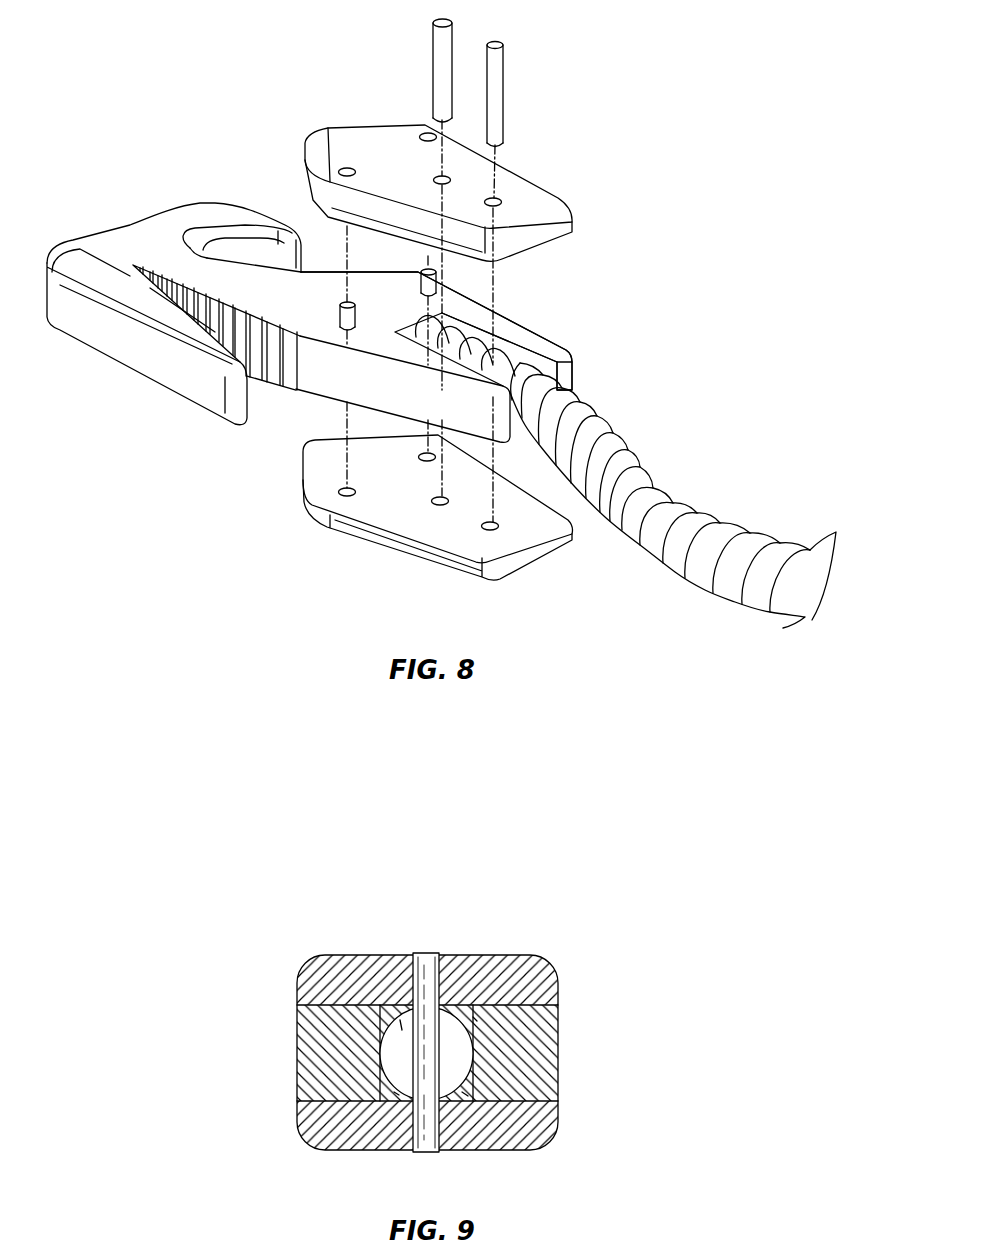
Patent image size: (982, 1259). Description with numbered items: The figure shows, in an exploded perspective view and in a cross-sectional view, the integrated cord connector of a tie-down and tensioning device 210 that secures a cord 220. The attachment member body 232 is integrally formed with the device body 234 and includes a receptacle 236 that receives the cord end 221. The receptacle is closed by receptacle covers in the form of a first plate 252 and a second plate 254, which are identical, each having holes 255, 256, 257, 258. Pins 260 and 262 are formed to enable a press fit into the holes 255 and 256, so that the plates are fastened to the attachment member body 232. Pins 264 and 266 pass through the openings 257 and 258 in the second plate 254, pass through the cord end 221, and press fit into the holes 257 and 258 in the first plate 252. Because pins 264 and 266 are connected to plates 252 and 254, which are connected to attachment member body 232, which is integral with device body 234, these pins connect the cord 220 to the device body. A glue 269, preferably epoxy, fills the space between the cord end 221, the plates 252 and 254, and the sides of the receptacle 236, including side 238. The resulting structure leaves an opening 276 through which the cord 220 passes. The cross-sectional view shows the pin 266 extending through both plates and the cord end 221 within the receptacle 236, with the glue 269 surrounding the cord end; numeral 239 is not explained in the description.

In FIG. 8, the tie-down and tensioning device 210 is at (553, 179).
In FIG. 8, the cord 220 is at (680, 510).
In FIG. 8, the cord end 221 is at (497, 355).
In FIG. 8, the attachment member body 232 is at (520, 353).
In FIG. 9, the attachment member body 232 is at (545, 1055).
In FIG. 8, the device body 234 is at (255, 293).
In FIG. 8, the receptacle 236 is at (547, 340).
In FIG. 9, the receptacle 236 is at (398, 1094).
In FIG. 9, the side of receptacle 238 is at (369, 1020).
In FIG. 8, the arm end face 239 is at (560, 365).
In FIG. 9, the arm end face 239 is at (477, 1018).
In FIG. 8, the first plate 252 is at (543, 553).
In FIG. 9, the first plate 252 is at (560, 1120).
In FIG. 8, the second plate 254 is at (372, 123).
In FIG. 9, the second plate 254 is at (540, 955).
In FIG. 8, the hole 255 is at (418, 456).
In FIG. 8, the hole 256 is at (340, 490).
In FIG. 8, the hole 257 is at (434, 505).
In FIG. 8, the hole 258 is at (484, 530).
In FIG. 8, the pin 260 is at (341, 307).
In FIG. 8, the pin 262 is at (420, 272).
In FIG. 8, the pin 264 is at (437, 38).
In FIG. 8, the pin 266 is at (498, 72).
In FIG. 9, the pin 266 is at (427, 963).
In FIG. 9, the glue 269 is at (466, 1095).
In FIG. 9, the opening 276 is at (400, 1025).